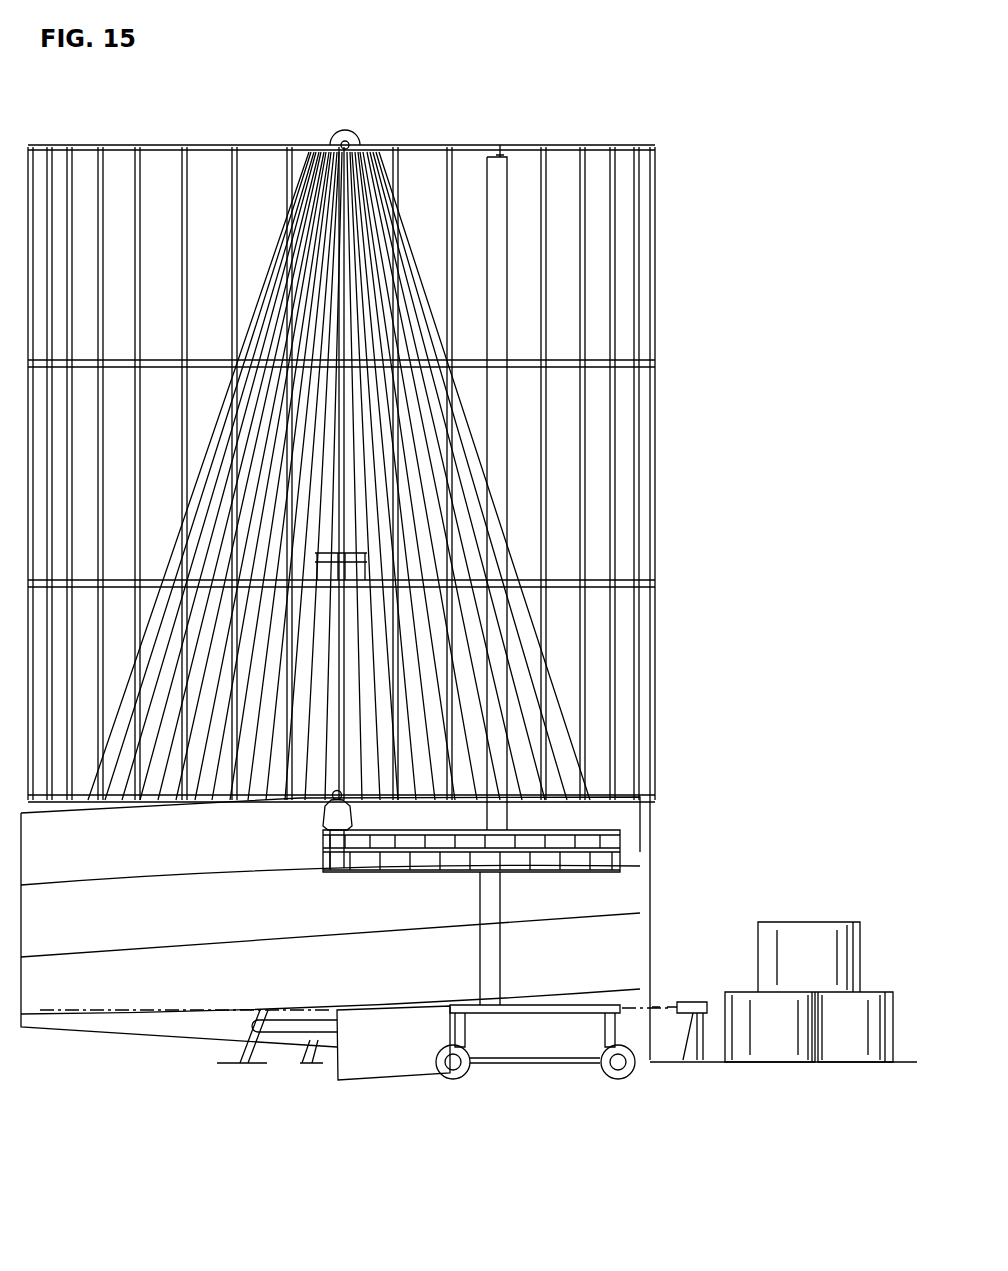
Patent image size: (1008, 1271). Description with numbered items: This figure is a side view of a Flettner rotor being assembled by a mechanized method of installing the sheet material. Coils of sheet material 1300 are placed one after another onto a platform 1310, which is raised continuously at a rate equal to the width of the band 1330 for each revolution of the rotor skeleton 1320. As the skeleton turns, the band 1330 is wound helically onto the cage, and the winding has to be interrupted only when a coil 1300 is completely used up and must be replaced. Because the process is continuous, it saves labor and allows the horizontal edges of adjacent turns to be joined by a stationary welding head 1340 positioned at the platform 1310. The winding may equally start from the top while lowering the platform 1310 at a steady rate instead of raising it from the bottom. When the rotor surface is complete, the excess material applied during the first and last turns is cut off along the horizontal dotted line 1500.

The rotor skeleton 1320 is at (645, 520).
The platform 1310 is at (432, 835).
The stationary welding head 1340 is at (330, 806).
The band 1330 is at (635, 903).
The coil of sheet material 1300 is at (802, 928).
The horizontal dotted line 1500 is at (47, 1010).